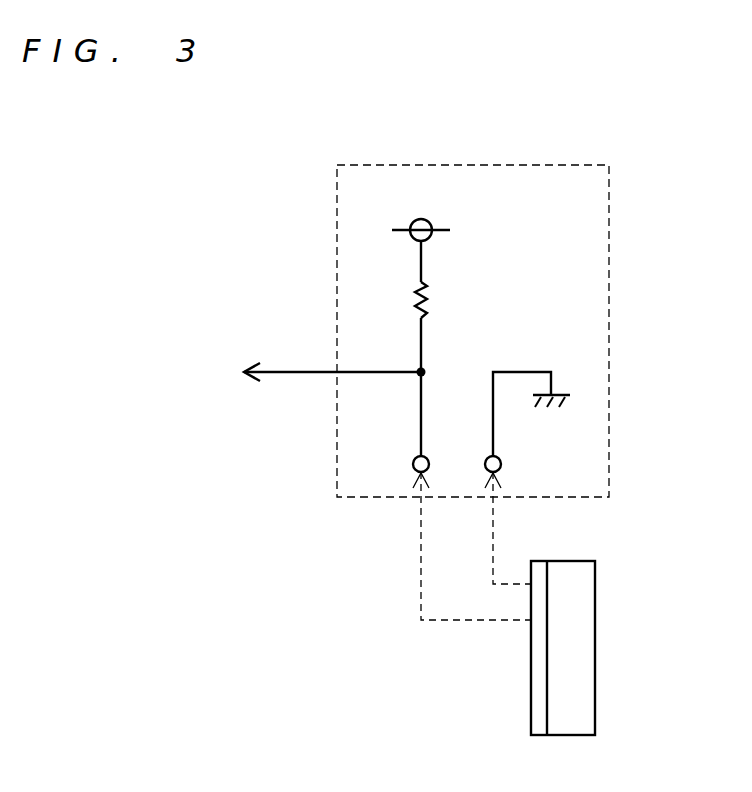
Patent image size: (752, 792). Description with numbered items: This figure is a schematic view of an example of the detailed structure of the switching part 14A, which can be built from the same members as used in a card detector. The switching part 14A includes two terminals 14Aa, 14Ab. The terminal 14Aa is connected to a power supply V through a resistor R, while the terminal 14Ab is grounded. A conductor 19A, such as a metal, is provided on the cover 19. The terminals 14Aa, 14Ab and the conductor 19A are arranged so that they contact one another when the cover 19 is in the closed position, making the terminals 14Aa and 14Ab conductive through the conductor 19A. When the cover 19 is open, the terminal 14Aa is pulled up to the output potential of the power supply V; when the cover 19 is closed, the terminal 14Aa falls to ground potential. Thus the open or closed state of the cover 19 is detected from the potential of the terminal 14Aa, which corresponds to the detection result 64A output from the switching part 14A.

The switching part 14A is at (475, 356).
The terminal 14Aa is at (413, 468).
The terminal 14Ab is at (501, 468).
The cover 19 is at (553, 648).
The conductor 19A is at (537, 679).
The detection result 64A is at (298, 373).
The resistor R is at (407, 300).
The power supply V is at (421, 215).